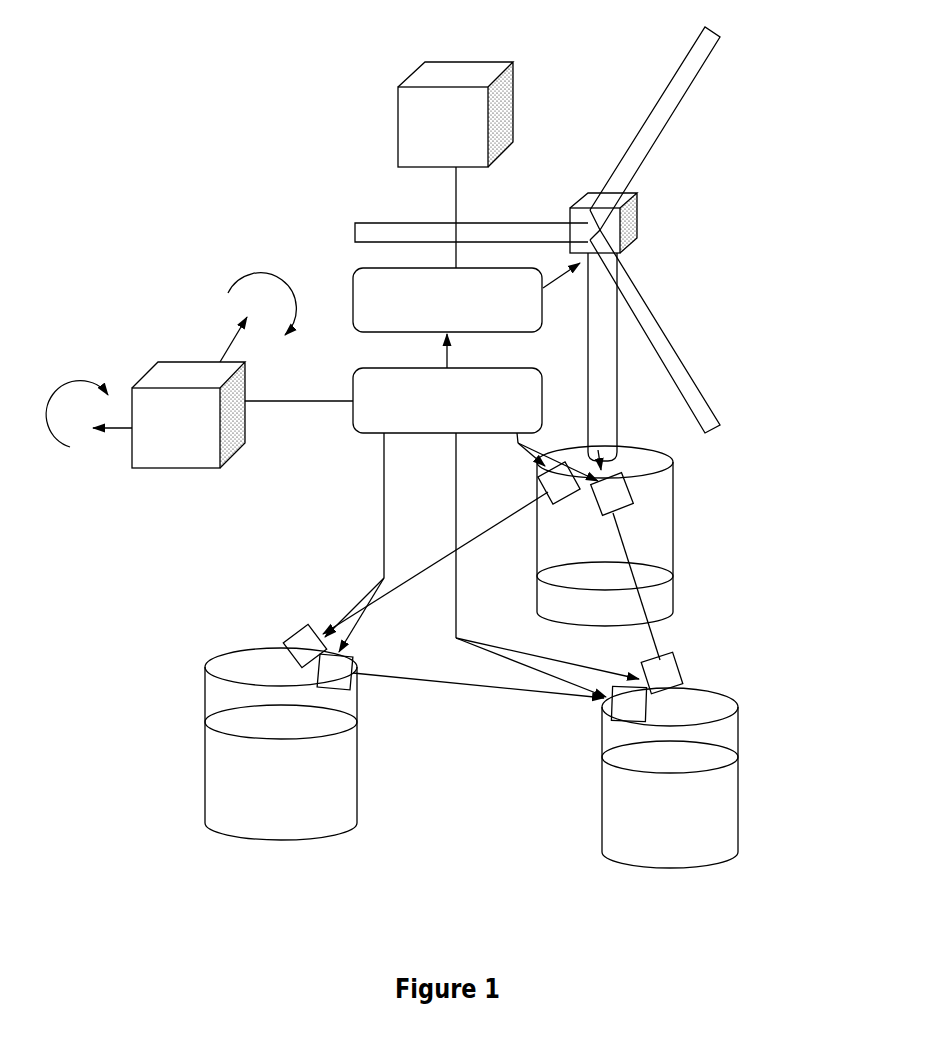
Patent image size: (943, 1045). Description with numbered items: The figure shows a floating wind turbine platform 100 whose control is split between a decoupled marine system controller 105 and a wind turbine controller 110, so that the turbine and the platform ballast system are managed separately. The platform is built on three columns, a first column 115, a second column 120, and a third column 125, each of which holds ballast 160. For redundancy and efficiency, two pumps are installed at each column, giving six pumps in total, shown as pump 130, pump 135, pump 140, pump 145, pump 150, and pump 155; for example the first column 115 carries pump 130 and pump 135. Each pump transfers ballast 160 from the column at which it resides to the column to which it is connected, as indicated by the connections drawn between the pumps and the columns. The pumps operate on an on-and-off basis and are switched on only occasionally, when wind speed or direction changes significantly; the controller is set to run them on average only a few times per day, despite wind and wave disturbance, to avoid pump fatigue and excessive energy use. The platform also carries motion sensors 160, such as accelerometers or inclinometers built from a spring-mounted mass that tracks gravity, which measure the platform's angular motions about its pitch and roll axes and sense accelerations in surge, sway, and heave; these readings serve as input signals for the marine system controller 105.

The floating wind turbine platform 100 is at (836, 45).
The marine system controller 105 is at (447, 400).
The wind turbine controller 110 is at (447, 300).
The first column 115 is at (673, 555).
The second column 120 is at (205, 745).
The third column 125 is at (738, 790).
The pump 130 is at (552, 483).
The pump 135 is at (625, 497).
The pump 140 is at (302, 626).
The pump 145 is at (342, 675).
The pump 150 is at (672, 670).
The pump 155 is at (608, 707).
The ballast / motion sensors 160 is at (625, 800).